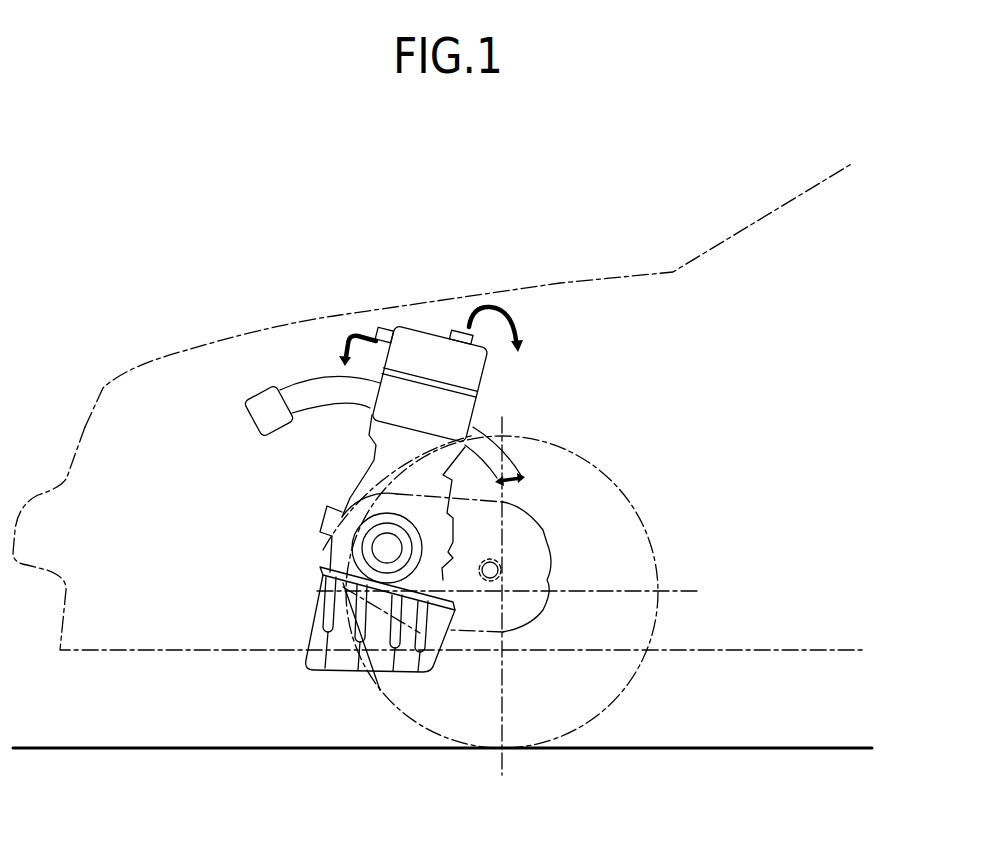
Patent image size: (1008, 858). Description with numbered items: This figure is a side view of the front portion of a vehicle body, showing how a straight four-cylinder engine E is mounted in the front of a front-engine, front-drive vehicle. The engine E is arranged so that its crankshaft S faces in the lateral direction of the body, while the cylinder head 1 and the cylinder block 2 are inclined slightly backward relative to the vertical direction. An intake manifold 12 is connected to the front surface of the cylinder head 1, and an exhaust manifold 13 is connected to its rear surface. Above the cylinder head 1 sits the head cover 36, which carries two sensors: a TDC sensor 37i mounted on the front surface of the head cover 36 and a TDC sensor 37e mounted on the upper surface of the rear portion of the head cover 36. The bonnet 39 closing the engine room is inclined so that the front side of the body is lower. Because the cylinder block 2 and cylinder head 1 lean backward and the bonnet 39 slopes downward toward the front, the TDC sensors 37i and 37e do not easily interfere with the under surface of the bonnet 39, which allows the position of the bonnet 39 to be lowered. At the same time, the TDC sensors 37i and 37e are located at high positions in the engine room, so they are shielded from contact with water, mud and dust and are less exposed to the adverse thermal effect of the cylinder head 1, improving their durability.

The cylinder head 1 is at (387, 412).
The cylinder block 2 is at (368, 473).
The intake manifold 12 is at (303, 366).
The exhaust manifold 13 is at (522, 447).
The head cover 36 is at (420, 345).
The TDC sensor 37i is at (378, 330).
The TDC sensor 37e is at (466, 320).
The bonnet 39 is at (287, 323).
The crankshaft S is at (380, 550).
The engine E is at (522, 372).